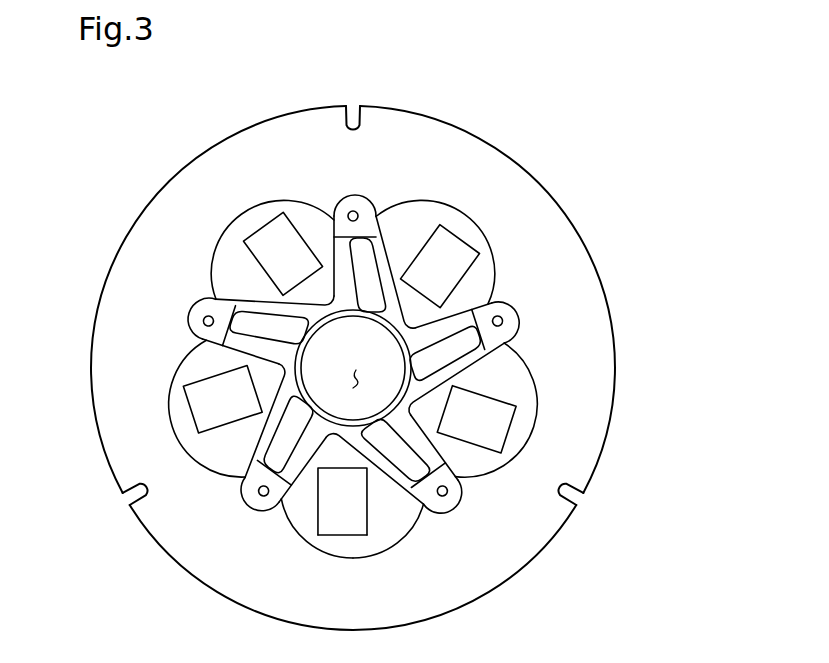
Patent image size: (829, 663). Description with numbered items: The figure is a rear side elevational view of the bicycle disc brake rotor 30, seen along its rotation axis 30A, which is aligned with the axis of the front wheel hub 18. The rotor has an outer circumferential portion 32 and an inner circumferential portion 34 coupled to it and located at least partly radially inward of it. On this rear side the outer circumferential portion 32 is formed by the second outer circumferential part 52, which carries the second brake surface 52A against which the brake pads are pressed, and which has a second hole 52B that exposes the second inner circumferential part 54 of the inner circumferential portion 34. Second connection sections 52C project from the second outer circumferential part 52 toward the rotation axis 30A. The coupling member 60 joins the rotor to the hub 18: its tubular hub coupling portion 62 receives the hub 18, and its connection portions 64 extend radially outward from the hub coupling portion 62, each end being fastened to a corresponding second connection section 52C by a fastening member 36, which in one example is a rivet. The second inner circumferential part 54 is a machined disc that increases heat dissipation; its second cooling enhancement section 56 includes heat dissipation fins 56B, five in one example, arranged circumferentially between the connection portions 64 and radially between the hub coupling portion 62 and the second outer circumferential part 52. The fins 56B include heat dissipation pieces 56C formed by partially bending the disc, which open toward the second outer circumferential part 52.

The hub 18 is at (320, 362).
The bicycle disc brake rotor 30 is at (657, 123).
The rotation axis 30A is at (354, 392).
The outer circumferential portion 32 is at (734, 456).
The inner circumferential portion 34 is at (529, 372).
The fastening members 36 is at (350, 210).
The second outer circumferential part 52 is at (678, 445).
The second brake surface 52A is at (585, 442).
The second hole 52B is at (513, 437).
The second connection sections 52C is at (500, 504).
The second inner circumferential part 54 is at (523, 392).
The second cooling enhancement section 56 is at (387, 542).
The heat dissipation fins 56B is at (353, 547).
The heat dissipation pieces 56C is at (335, 540).
The coupling member 60 is at (256, 277).
The hub coupling portion 62 is at (333, 293).
The connection portions 64 is at (248, 307).